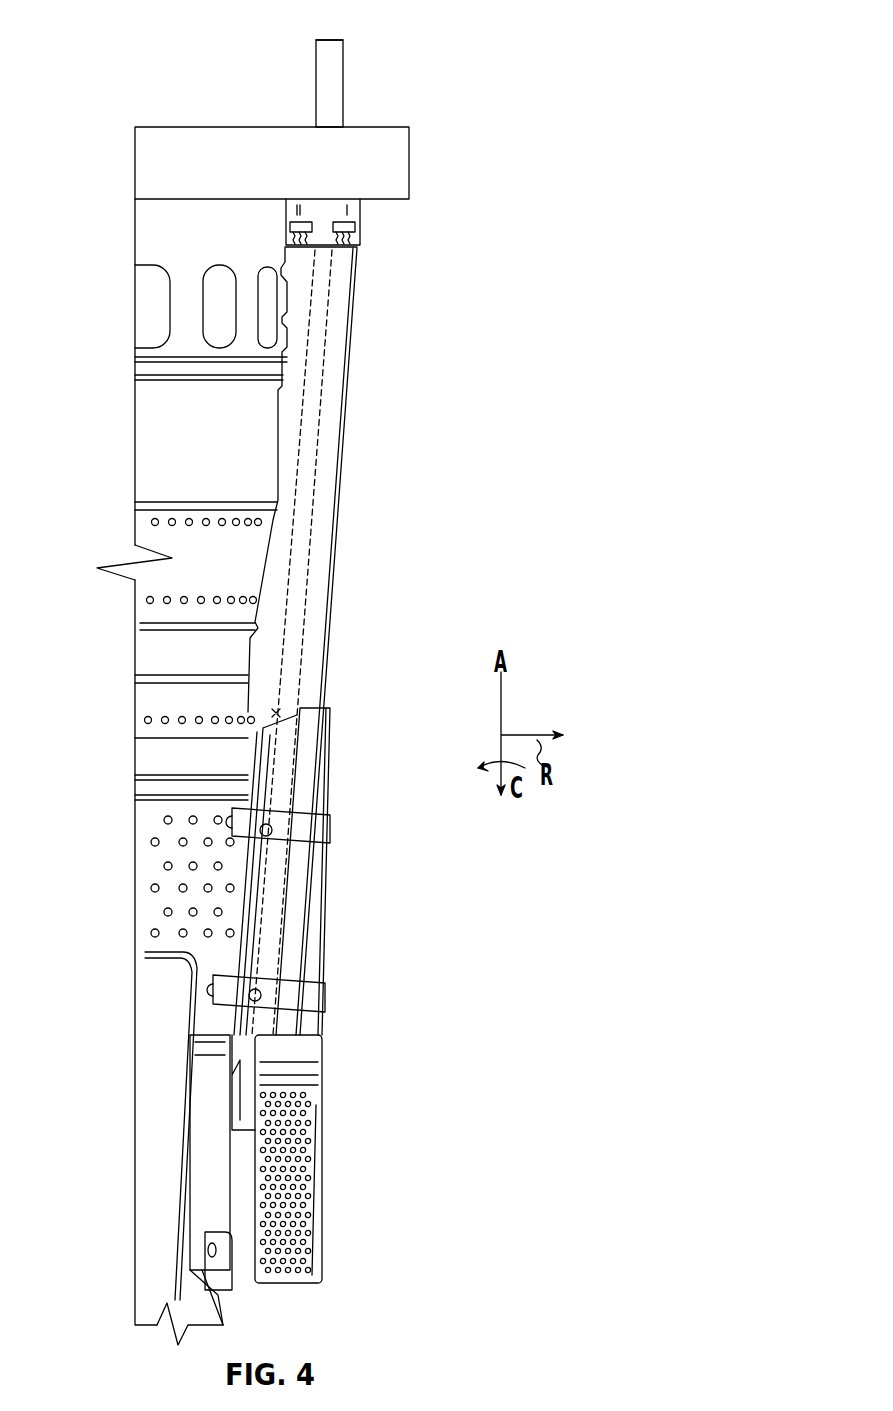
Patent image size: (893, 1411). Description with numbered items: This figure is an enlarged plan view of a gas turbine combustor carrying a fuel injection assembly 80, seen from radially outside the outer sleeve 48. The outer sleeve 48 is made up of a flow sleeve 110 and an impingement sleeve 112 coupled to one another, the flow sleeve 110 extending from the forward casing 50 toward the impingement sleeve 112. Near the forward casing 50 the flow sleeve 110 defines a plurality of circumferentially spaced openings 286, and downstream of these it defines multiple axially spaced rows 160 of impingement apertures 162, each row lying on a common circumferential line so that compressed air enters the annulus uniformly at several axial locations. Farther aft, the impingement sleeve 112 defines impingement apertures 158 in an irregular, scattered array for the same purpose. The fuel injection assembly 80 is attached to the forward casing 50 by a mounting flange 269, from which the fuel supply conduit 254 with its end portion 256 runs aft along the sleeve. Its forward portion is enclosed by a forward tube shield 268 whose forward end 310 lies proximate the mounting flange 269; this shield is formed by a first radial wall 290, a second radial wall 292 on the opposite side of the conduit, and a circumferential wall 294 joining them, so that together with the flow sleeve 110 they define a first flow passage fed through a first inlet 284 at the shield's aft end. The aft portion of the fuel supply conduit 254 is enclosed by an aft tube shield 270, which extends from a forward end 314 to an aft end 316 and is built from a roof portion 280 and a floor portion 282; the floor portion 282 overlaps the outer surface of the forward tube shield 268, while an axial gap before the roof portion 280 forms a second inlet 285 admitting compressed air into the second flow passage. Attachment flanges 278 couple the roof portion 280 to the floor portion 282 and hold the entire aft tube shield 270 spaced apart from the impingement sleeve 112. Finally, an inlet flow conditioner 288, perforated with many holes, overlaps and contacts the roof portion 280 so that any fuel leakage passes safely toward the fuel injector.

The outer sleeve 48 is at (175, 418).
The forward casing 50 is at (393, 160).
The fuel injection assembly 80 is at (350, 745).
The flow sleeve 110 is at (253, 468).
The impingement sleeve 112 is at (155, 1015).
The impingement apertures 158 is at (180, 842).
The rows 160 is at (148, 718).
The impingement apertures 162 is at (223, 520).
The fuel supply conduit 254 is at (340, 85).
The rod end 256 is at (330, 40).
The forward tube shield 268 is at (320, 550).
The mounting flange 269 is at (355, 213).
The aft tube shield 270 is at (305, 895).
The attachment flange 278 is at (315, 830).
The roof portion 280 is at (305, 955).
The floor portion 282 is at (262, 925).
The first inlet 284 is at (265, 712).
The second inlet 285 is at (277, 712).
The openings 286 is at (180, 312).
The inlet flow conditioner 288 is at (315, 1165).
The first radial wall 290 is at (335, 325).
The second radial wall 292 is at (352, 372).
The circumferential wall 294 is at (340, 497).
The forward end 310 is at (355, 245).
The forward end 314 is at (330, 705).
The aft end 316 is at (235, 1050).